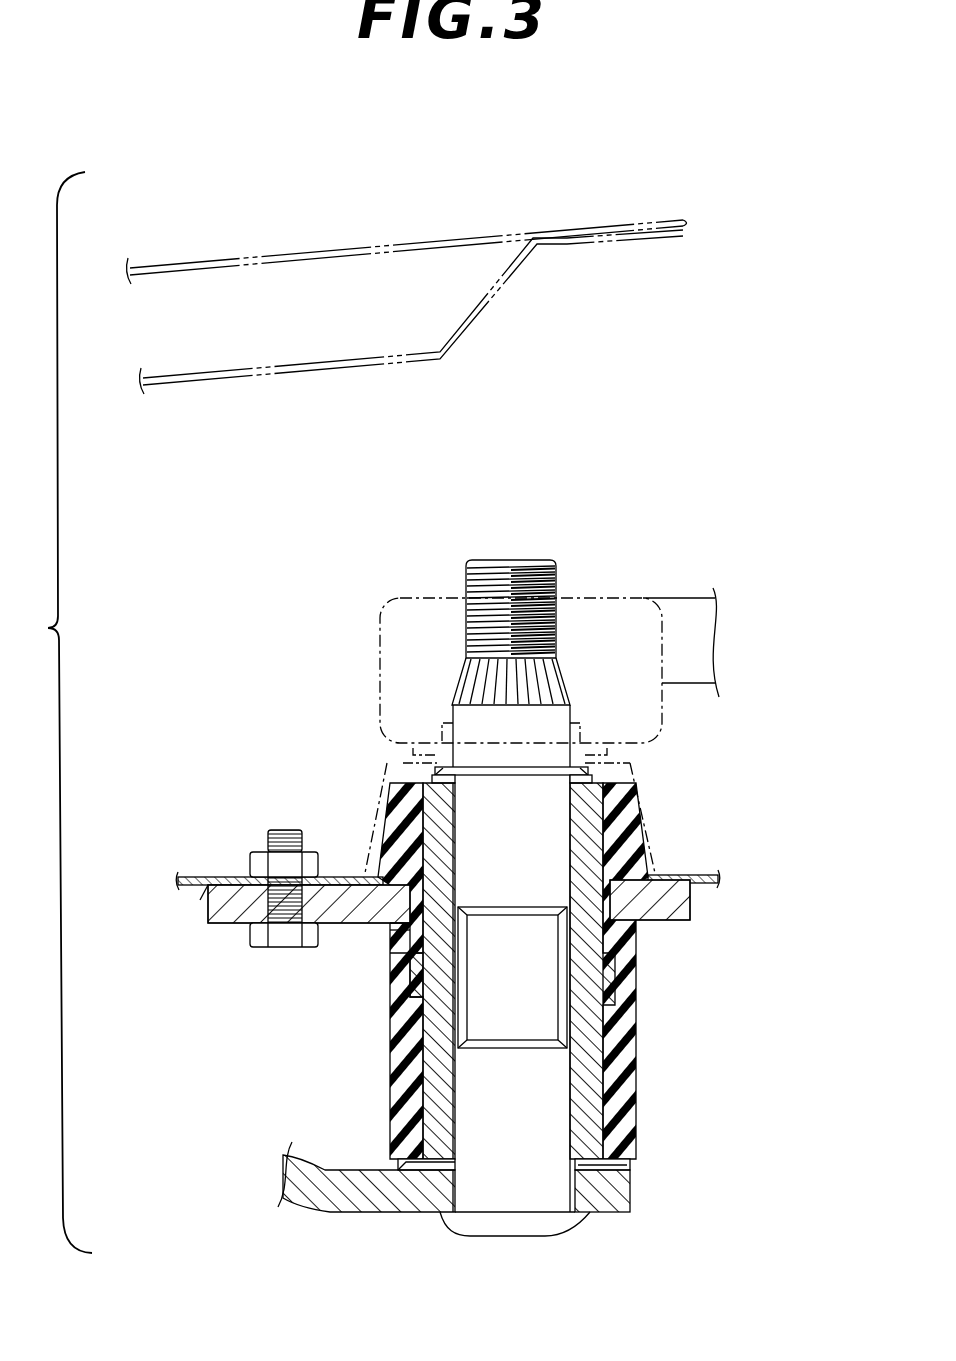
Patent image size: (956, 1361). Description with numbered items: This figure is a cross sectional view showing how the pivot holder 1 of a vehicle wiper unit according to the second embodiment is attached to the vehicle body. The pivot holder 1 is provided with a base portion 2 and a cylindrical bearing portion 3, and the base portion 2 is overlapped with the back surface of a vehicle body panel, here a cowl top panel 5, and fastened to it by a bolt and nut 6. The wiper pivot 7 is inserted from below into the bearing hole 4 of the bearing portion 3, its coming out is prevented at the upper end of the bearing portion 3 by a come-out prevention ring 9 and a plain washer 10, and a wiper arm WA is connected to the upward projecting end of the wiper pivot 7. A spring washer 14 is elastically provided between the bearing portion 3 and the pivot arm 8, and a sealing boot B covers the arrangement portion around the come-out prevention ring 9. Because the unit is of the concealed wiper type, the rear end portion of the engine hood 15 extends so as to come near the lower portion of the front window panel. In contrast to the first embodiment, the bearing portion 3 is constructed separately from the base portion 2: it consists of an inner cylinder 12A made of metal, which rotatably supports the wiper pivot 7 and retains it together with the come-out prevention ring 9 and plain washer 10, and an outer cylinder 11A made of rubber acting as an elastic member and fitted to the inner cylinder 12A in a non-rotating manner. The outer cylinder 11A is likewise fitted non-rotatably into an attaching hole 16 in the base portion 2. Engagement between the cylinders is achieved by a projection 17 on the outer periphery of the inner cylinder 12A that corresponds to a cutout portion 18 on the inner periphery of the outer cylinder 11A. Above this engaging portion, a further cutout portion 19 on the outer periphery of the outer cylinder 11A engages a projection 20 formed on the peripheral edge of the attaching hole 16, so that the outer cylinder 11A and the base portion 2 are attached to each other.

The pivot holder 1 is at (452, 875).
The base portion 2 is at (208, 916).
The bearing portion 3 is at (535, 1025).
The bearing hole 4 is at (560, 1130).
The cowl top panel 5 is at (690, 878).
The bolt and nut 6 is at (258, 858).
The wiper pivot 7 is at (553, 558).
The pivot arm 8 is at (329, 1215).
The come-out prevention ring 9 is at (435, 770).
The plain washer 10 is at (432, 779).
The outer cylinder 11A is at (575, 971).
The inner cylinder 12A is at (608, 1048).
The spring washer 14 is at (419, 1167).
The engine hood 15 is at (503, 233).
The attaching hole 16 is at (355, 965).
The projection 17 is at (605, 1004).
The cutout portion 18 is at (416, 979).
The cutout portion 19 is at (618, 903).
The projection 20 is at (400, 934).
The sealing boot B is at (375, 823).
The wiper arm WA is at (425, 598).